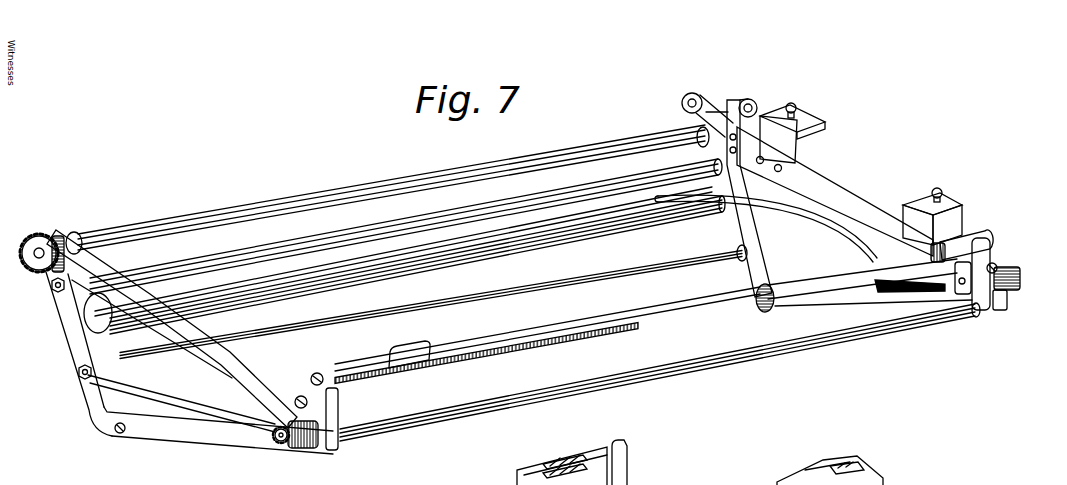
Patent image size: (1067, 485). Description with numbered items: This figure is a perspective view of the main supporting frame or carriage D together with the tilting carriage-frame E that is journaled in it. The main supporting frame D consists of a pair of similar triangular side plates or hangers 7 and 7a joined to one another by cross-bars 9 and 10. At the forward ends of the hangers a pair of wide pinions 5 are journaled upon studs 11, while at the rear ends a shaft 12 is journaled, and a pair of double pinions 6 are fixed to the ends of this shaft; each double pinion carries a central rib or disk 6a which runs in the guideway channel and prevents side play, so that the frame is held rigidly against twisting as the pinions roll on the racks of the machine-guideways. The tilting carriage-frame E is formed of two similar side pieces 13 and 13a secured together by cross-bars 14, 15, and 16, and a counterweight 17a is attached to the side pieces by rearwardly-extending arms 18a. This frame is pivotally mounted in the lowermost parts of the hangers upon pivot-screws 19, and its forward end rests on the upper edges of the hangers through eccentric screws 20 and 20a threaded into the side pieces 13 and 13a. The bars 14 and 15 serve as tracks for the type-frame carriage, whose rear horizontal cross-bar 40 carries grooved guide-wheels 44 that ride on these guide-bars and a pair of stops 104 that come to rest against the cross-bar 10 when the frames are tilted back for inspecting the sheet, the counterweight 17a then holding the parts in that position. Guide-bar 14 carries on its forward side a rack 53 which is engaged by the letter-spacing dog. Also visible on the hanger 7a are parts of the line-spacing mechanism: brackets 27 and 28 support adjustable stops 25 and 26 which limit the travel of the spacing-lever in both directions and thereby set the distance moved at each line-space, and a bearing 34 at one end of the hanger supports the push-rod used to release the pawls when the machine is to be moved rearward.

The wide pinion 5 is at (297, 451).
The double pinion 6 is at (25, 240).
The central rib or disk 6a is at (46, 262).
The triangular side plate or hanger 7 is at (66, 326).
The triangular side plate or hanger 7a is at (758, 228).
The cross-bar 9 is at (223, 256).
The cross-bar 10 is at (437, 307).
The stud 11 is at (276, 441).
The shaft 12 is at (163, 231).
The side piece 13 is at (207, 390).
The side piece 13a is at (863, 276).
The cross-bar (guide-bar) 14 is at (594, 328).
The cross-bar (guide-bar) 15 is at (392, 361).
The cross-bar 16 is at (706, 378).
The counterweight 17a is at (547, 259).
The rearwardly-extending arm 18a is at (864, 236).
The pivot-screw 19 is at (113, 430).
The eccentric screw 20 is at (322, 401).
The eccentric screw 20a is at (998, 266).
The adjustable stop 25 is at (937, 190).
The adjustable stop 26 is at (797, 108).
The bracket 27 is at (957, 208).
The bracket 28 is at (827, 128).
The bearing 34 is at (682, 103).
The horizontal cross-bar 40 is at (515, 459).
The grooved guide-wheel 44 is at (640, 478).
The rack 53 is at (505, 370).
The stop 104 is at (627, 452).
The main supporting frame or carriage D is at (163, 440).
The tilting carriage-frame E is at (817, 279).